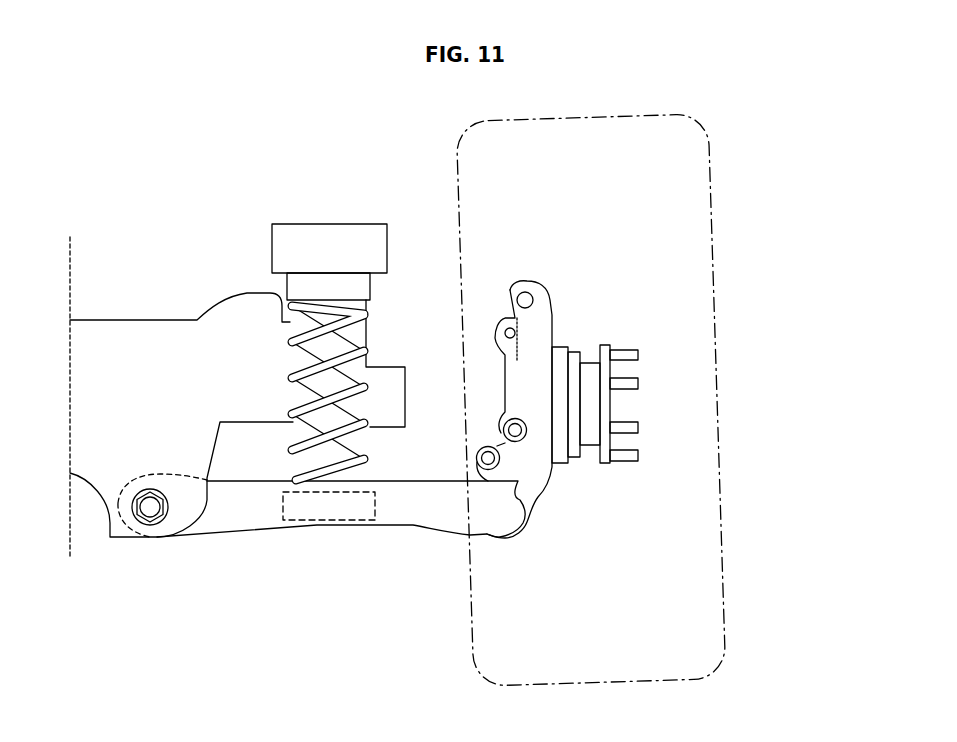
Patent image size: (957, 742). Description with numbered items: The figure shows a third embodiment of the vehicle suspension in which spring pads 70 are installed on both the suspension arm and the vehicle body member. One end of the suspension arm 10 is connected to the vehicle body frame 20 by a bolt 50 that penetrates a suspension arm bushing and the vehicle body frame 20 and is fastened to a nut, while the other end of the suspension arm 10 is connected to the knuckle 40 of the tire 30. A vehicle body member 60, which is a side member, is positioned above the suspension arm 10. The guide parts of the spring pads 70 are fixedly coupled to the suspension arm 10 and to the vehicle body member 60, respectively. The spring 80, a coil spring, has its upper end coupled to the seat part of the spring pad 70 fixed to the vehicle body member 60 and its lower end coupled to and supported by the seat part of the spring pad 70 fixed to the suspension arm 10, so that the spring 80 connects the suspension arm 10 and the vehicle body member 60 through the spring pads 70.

The suspension arm 10 is at (245, 518).
The vehicle body frame 20 is at (146, 340).
The tire 30 is at (712, 235).
The knuckle 40 is at (538, 403).
The bolt 50 is at (148, 512).
The vehicle body member 60 is at (326, 232).
The spring pad 70 is at (295, 283).
The spring 80 is at (365, 350).